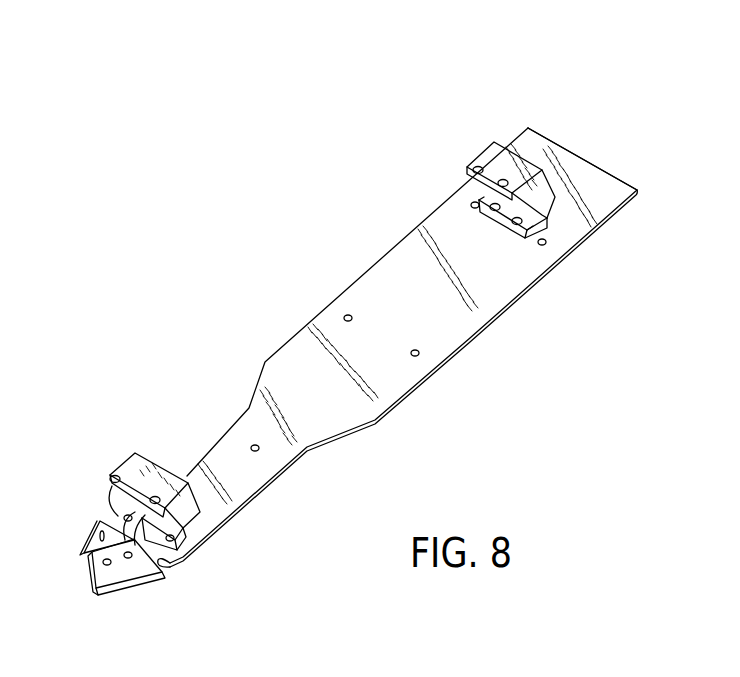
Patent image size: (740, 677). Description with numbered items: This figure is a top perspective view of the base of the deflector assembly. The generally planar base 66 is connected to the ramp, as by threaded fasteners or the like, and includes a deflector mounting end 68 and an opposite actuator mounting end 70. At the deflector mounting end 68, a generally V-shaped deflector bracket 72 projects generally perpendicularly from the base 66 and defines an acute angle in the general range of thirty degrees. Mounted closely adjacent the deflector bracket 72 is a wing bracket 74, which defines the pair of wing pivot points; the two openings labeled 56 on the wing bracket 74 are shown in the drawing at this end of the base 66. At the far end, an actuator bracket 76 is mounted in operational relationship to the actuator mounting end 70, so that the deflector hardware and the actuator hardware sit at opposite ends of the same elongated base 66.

The base 66 is at (387, 273).
The actuator mounting end 70 is at (563, 162).
The actuator bracket 76 is at (488, 160).
The wing bracket 74 is at (160, 476).
The fastener holes 56 is at (115, 477).
The deflector bracket 72 is at (87, 535).
The deflector mounting end 68 is at (136, 587).